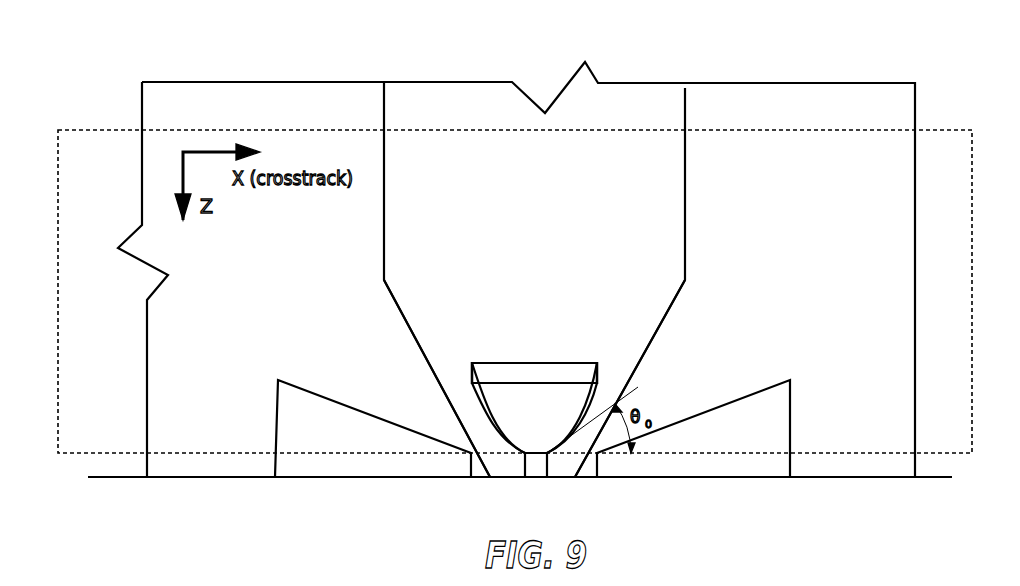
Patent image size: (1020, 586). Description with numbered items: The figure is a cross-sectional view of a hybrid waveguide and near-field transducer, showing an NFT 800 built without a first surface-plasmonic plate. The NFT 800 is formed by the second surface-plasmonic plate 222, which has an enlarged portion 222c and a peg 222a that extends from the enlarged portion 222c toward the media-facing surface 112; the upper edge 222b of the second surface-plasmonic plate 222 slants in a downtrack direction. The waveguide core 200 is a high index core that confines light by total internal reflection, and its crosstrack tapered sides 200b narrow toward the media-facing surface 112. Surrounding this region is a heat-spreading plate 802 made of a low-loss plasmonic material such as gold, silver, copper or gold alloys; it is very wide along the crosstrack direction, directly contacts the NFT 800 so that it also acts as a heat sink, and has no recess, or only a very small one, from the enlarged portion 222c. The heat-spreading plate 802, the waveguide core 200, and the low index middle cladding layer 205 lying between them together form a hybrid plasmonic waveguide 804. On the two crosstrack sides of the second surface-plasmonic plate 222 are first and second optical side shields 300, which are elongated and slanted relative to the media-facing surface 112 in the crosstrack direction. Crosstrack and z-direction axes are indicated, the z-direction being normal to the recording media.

The hybrid plasmonic waveguide 804 is at (230, 63).
The middle cladding layer 205 is at (285, 88).
The heat-spreading plate 802 is at (87, 128).
The waveguide core 200 is at (433, 95).
The crosstrack tapered sides 200b is at (430, 367).
The optical side shields 300 is at (308, 397).
The second surface-plasmonic plate 222 is at (475, 390).
The upper edge 222b is at (480, 370).
The enlarged portion 222c is at (510, 417).
The peg 222a is at (547, 468).
The near-field transducer (NFT) 800 is at (612, 346).
The media-facing surface 112 is at (868, 477).